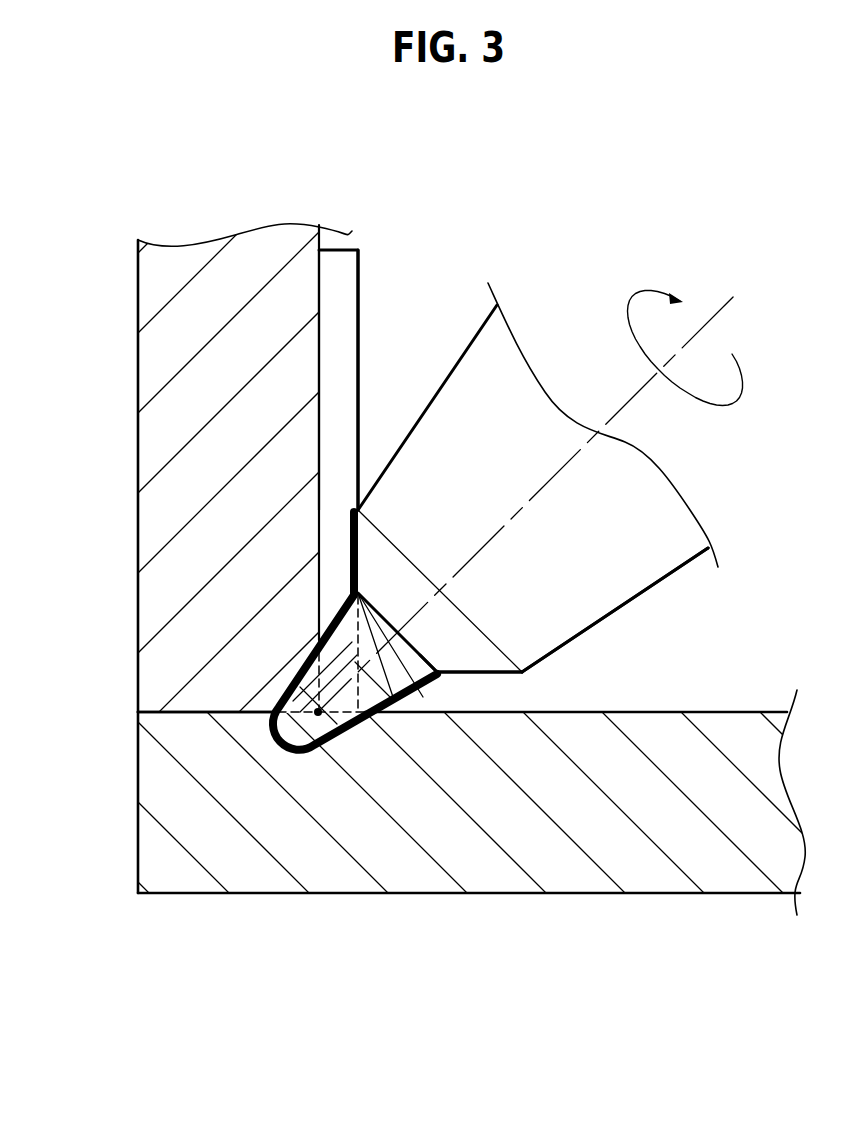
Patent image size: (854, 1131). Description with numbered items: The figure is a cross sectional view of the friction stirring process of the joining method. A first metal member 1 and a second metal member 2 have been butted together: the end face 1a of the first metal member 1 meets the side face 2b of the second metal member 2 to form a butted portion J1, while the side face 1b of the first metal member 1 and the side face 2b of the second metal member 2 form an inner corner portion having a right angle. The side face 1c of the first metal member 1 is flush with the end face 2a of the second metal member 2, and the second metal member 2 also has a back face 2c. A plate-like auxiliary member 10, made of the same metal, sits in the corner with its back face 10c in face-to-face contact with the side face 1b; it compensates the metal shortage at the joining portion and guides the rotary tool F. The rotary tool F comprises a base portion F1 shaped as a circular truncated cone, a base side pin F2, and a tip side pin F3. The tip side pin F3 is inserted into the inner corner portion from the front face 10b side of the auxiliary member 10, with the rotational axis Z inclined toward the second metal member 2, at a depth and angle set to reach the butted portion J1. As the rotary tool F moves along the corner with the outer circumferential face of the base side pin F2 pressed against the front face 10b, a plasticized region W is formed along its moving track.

The first metal member 1 is at (103, 268).
The end face 1a is at (197, 717).
The side face 1b is at (322, 238).
The side face 1c is at (138, 370).
The second metal member 2 is at (543, 933).
The end face 2a is at (138, 812).
The side face 2b is at (712, 712).
The back face 2c is at (735, 893).
The auxiliary member 10 is at (372, 246).
The front face 10b is at (358, 290).
The back face 10c is at (298, 337).
The butted portion J1 is at (126, 709).
The rotary tool F is at (674, 578).
The base portion F1 is at (626, 607).
The base side pin F2 is at (473, 655).
The tip side pin F3 is at (420, 688).
The plasticized region W is at (297, 757).
The rotational axis Z is at (531, 490).